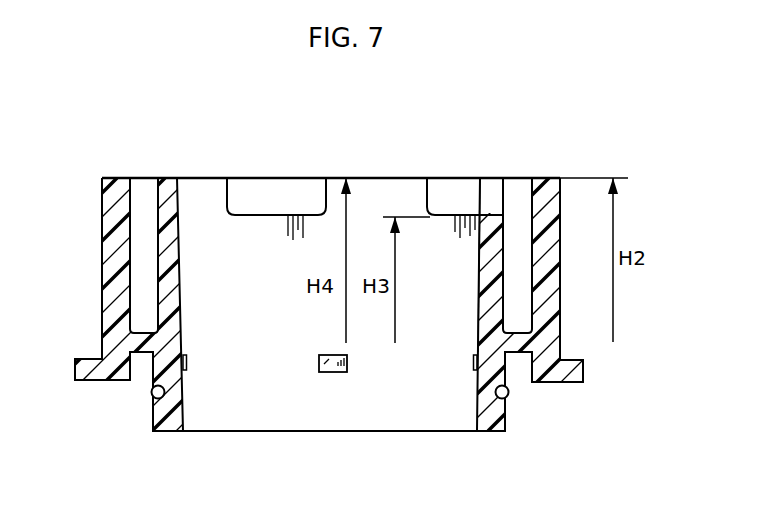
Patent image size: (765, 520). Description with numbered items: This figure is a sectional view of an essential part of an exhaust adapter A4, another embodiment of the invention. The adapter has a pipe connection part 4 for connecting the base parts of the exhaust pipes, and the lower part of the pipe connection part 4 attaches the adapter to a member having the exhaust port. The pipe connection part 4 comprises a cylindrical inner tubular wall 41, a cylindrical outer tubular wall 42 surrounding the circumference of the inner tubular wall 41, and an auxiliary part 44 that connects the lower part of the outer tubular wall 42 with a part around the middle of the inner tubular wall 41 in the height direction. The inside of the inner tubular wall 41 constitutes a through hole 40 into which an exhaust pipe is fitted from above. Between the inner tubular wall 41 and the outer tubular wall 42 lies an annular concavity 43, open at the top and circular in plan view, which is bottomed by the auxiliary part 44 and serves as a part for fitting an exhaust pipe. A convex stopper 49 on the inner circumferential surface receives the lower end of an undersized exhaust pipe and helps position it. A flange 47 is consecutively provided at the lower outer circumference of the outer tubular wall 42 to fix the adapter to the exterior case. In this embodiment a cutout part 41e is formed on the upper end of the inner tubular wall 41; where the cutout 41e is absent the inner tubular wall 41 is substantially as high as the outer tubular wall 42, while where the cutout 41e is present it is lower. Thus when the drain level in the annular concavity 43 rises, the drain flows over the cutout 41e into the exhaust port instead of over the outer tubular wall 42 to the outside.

The exhaust adapter A4 is at (115, 148).
The pipe connection part 4 is at (231, 148).
The through hole 40 is at (373, 400).
The inner tubular wall 41 is at (500, 212).
The cutout part 41e is at (284, 193).
The outer tubular wall 42 is at (551, 186).
The annular concavity 43 is at (527, 192).
The auxiliary part 44 is at (520, 345).
The flange 47 is at (577, 377).
The stopper 49 is at (322, 362).